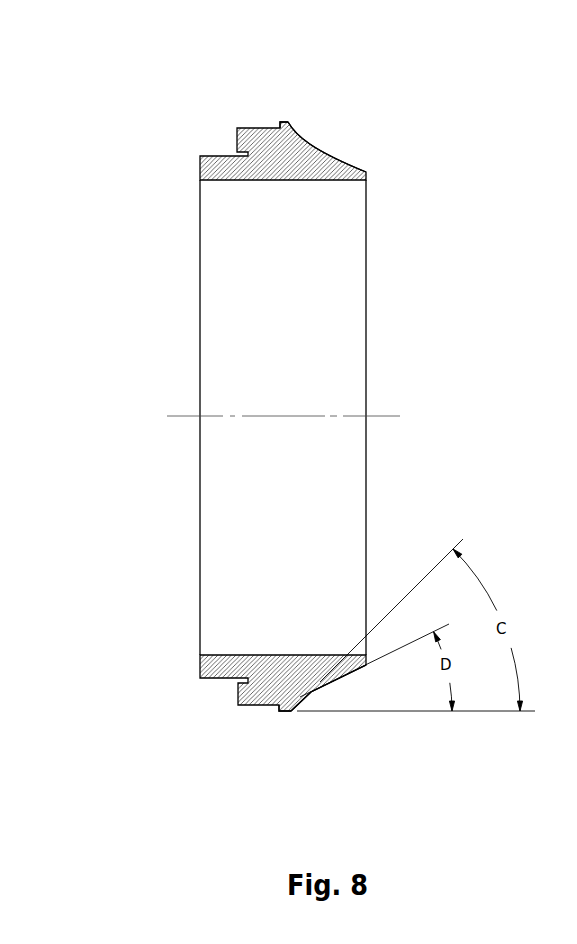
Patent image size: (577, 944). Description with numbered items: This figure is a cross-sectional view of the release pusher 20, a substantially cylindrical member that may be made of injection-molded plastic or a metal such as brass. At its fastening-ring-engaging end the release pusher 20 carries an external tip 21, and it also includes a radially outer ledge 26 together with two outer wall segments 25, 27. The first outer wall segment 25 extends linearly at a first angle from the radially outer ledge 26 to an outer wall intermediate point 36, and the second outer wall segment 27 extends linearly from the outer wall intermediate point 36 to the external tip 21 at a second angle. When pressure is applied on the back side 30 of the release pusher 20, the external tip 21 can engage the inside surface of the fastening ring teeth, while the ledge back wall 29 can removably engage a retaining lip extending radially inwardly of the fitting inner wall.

The release pusher 20 is at (206, 179).
The external tip 21 is at (367, 172).
The radially outer ledge 26 is at (288, 121).
The outer wall intermediate point 36 is at (316, 148).
The back side 30 is at (199, 672).
The ledge back wall 29 is at (279, 710).
The first outer wall segment 25 is at (301, 703).
The second outer wall segment 27 is at (345, 675).